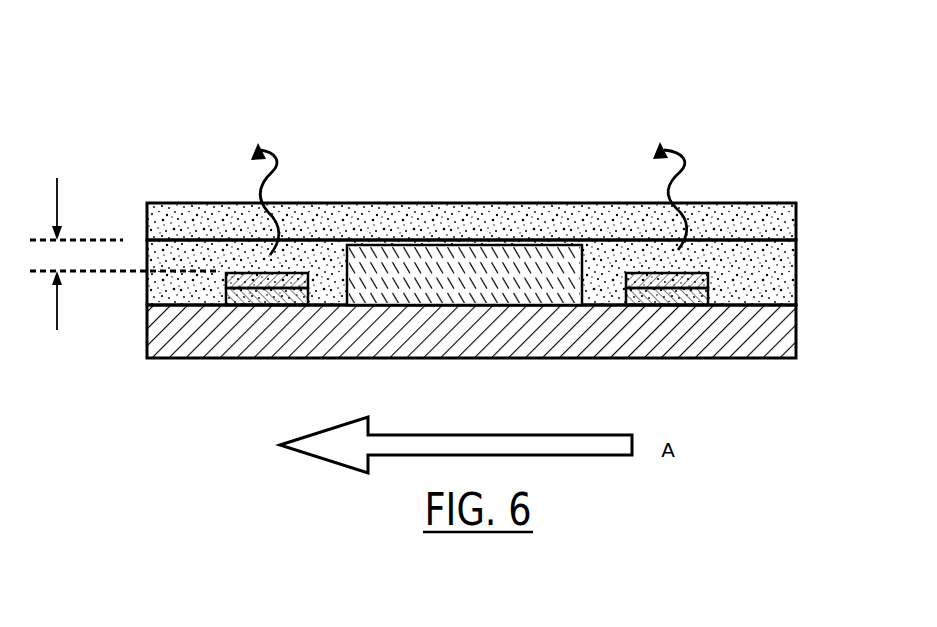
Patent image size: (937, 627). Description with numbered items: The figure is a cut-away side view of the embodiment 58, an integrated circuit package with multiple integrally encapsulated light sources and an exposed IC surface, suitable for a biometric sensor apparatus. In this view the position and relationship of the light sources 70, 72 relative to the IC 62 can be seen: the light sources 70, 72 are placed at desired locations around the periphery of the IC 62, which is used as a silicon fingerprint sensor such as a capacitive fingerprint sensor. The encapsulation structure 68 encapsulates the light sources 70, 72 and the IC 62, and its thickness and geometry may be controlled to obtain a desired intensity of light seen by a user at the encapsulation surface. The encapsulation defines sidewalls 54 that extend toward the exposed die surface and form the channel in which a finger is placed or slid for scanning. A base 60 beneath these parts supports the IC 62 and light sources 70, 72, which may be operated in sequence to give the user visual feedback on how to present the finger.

The embodiment 58 is at (133, 98).
The sidewalls 54 is at (488, 212).
The encapsulation structure 68 is at (796, 250).
The light source 72 is at (708, 284).
The substrate 60 is at (796, 340).
The light source 70 is at (262, 290).
The sensor IC 62 is at (447, 305).